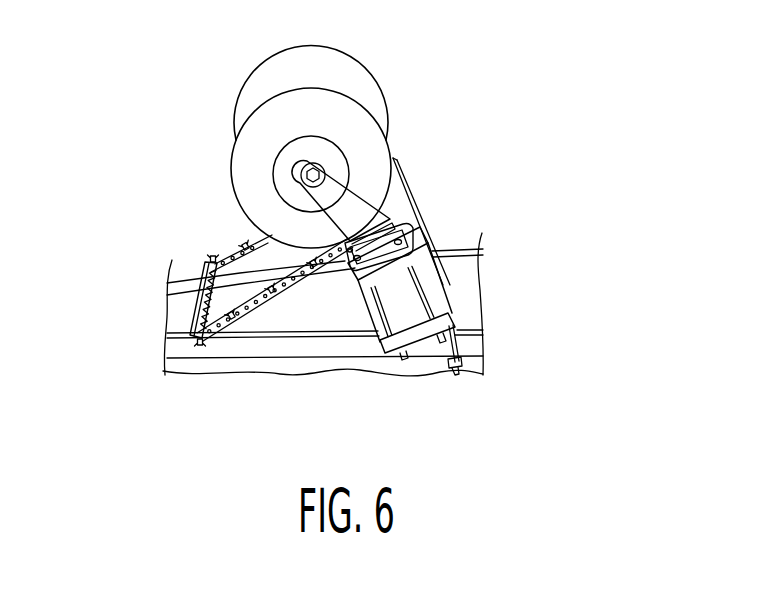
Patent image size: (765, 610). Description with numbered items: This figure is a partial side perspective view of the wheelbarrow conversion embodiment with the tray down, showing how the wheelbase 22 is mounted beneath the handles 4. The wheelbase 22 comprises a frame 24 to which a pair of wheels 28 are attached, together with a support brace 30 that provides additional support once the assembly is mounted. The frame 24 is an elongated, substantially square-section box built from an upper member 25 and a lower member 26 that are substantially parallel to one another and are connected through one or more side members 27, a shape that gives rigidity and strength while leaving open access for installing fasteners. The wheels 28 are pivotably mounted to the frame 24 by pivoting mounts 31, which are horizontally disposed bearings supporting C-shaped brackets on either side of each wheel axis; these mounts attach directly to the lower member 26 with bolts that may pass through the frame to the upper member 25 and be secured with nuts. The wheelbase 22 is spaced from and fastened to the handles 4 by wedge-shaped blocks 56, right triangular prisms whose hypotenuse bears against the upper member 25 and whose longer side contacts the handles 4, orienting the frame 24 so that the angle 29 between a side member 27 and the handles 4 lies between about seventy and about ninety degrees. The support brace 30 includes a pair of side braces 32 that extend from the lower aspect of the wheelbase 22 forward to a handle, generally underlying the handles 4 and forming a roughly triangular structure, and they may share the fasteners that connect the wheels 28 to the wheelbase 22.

The handles 4 is at (455, 257).
The wheelbase 22 is at (437, 118).
The frame 24 is at (435, 226).
The upper member 25 is at (450, 343).
The lower member 26 is at (408, 264).
The side member 27 is at (371, 316).
The wheels 28 is at (248, 158).
The angle 29 is at (354, 294).
The support brace 30 is at (181, 312).
The pivoting mounts 31 is at (400, 200).
The side braces 32 is at (265, 299).
The wedge-shaped blocks 56 is at (462, 337).